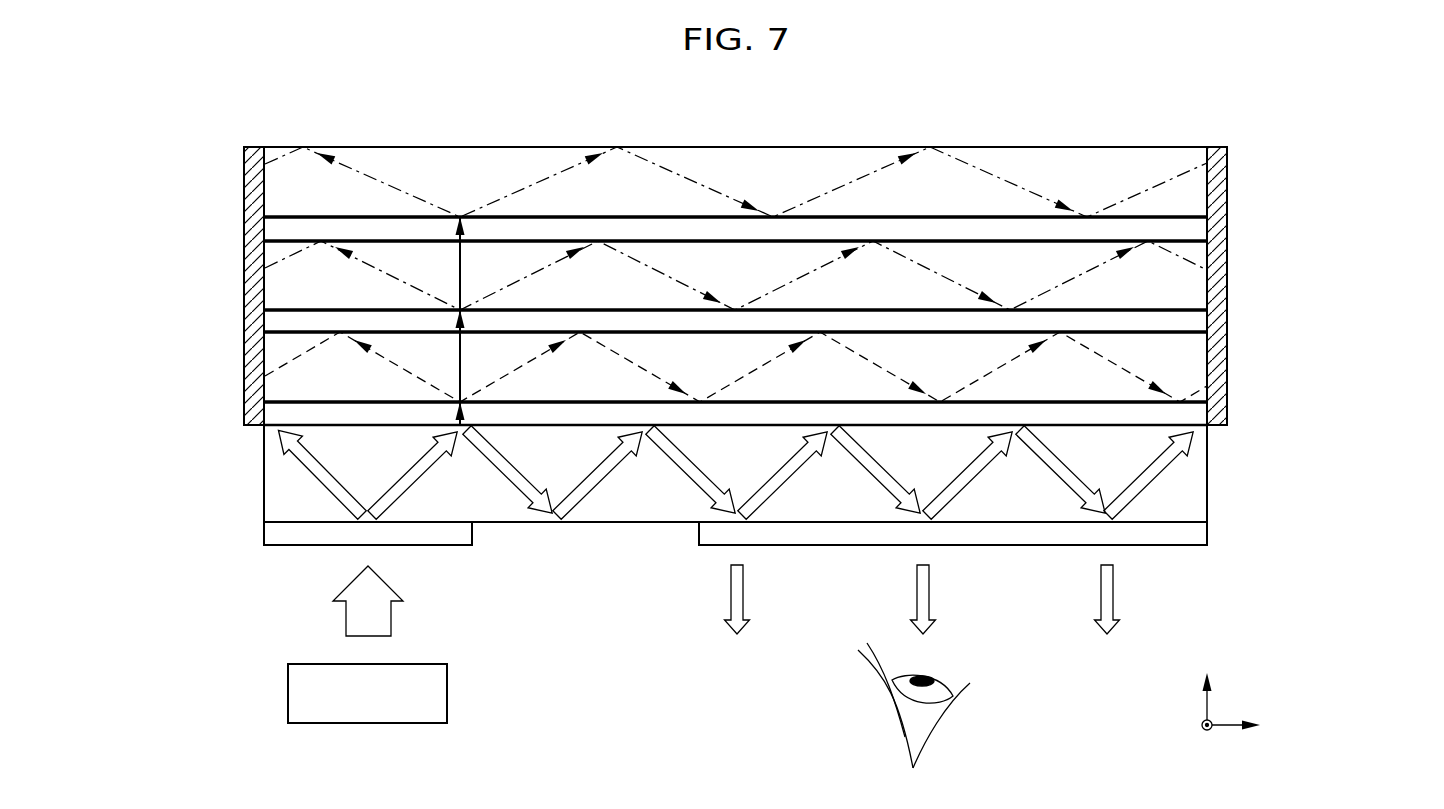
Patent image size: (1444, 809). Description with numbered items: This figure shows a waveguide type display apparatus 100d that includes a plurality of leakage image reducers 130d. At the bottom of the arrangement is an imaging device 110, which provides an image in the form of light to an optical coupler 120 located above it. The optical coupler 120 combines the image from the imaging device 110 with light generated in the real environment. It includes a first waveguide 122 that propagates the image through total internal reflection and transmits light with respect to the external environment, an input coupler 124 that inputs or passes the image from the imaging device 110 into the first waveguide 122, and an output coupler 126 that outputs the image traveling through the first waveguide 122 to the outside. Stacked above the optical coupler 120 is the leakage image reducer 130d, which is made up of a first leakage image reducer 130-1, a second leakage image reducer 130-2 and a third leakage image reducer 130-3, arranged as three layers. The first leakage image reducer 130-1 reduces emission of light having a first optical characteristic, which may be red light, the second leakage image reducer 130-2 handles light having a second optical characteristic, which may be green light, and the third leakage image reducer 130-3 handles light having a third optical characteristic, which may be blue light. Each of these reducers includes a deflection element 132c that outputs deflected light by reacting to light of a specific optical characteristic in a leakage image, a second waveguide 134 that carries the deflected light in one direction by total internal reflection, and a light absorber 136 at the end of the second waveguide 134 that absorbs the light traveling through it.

The display apparatus 100d is at (1326, 74).
The imaging device 110 is at (368, 723).
The optical coupler 120 is at (677, 658).
The first waveguide 122 is at (587, 515).
The input coupler 124 is at (458, 532).
The output coupler 126 is at (708, 532).
The leakage image reducer 130d is at (1347, 150).
The first leakage image reducer 130-1 is at (1240, 335).
The second leakage image reducer 130-2 is at (1240, 245).
The third leakage image reducer 130-3 is at (1240, 150).
The deflection element 132c is at (276, 413).
The second waveguide 134 is at (276, 350).
The light absorber 136 is at (262, 293).